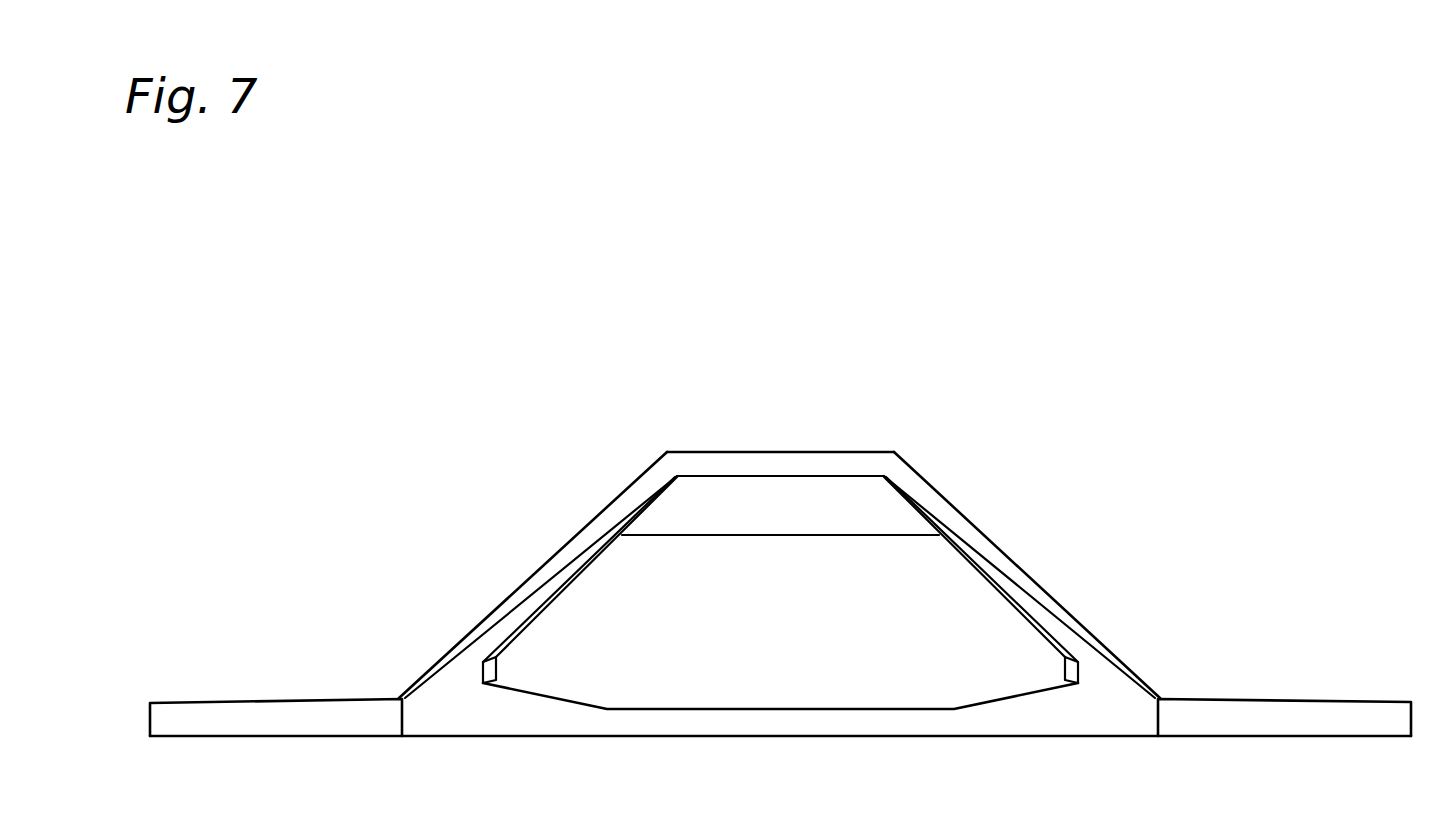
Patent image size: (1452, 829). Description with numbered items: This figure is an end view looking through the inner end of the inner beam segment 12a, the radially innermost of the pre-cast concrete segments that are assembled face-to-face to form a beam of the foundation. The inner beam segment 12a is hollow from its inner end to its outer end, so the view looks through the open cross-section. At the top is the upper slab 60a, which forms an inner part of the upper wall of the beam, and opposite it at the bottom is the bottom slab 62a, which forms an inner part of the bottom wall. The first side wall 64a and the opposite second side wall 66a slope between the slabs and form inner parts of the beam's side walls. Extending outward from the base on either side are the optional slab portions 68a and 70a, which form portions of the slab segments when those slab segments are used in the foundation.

The inner beam segment 12a is at (696, 360).
The upper slab 60a is at (820, 450).
The bottom slab 62a is at (720, 735).
The first side wall 64a is at (998, 547).
The second side wall 66a is at (572, 540).
The slab portion 68a is at (1255, 700).
The slab portion 70a is at (292, 700).